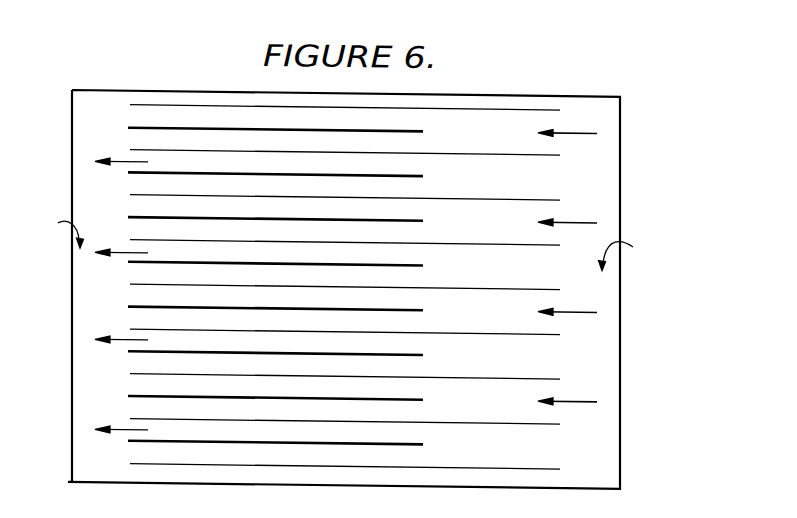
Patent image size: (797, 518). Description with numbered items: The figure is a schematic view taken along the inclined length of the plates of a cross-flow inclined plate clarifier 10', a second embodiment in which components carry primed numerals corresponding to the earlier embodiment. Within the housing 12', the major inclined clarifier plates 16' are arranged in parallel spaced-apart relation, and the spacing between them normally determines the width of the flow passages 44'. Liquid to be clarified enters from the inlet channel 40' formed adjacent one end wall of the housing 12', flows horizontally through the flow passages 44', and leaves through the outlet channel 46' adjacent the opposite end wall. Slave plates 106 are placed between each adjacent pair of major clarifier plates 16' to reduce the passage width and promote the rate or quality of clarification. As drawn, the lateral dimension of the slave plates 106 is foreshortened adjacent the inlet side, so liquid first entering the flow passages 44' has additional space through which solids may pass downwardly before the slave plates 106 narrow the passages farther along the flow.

The cross-flow inclined plate clarifier 10' is at (702, 136).
The housing 12' is at (369, 290).
The major inclined clarifier plates 16' is at (345, 287).
The inlet channel 40' is at (633, 254).
The flow passages 44' is at (532, 261).
The outlet channel 46' is at (53, 229).
The slave plates 106 is at (128, 127).